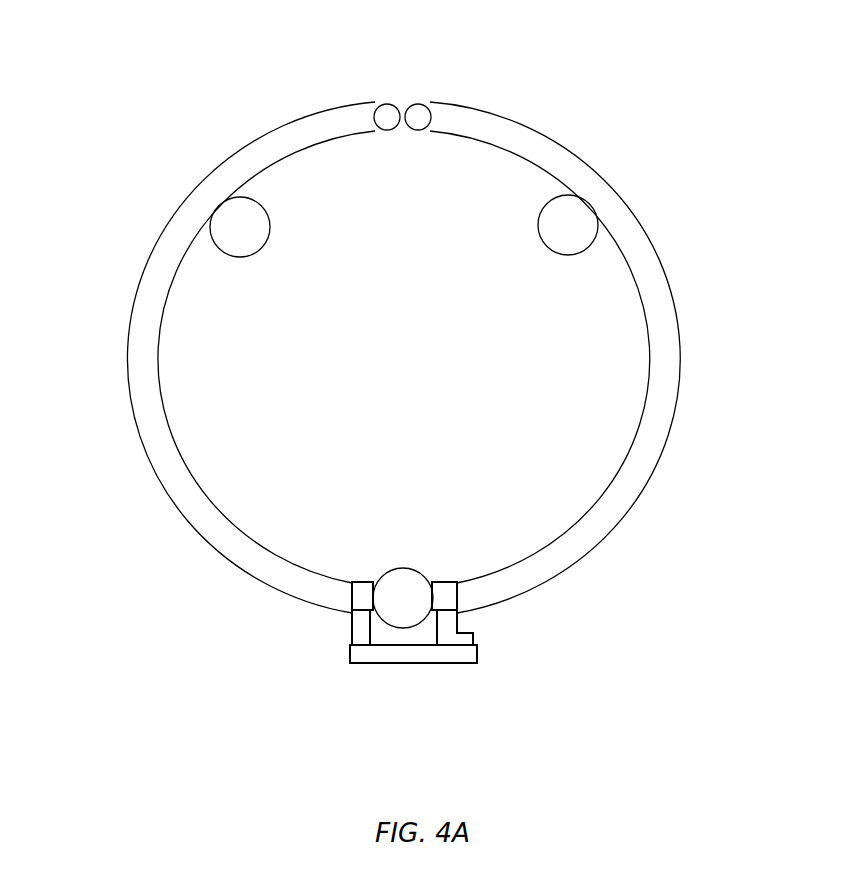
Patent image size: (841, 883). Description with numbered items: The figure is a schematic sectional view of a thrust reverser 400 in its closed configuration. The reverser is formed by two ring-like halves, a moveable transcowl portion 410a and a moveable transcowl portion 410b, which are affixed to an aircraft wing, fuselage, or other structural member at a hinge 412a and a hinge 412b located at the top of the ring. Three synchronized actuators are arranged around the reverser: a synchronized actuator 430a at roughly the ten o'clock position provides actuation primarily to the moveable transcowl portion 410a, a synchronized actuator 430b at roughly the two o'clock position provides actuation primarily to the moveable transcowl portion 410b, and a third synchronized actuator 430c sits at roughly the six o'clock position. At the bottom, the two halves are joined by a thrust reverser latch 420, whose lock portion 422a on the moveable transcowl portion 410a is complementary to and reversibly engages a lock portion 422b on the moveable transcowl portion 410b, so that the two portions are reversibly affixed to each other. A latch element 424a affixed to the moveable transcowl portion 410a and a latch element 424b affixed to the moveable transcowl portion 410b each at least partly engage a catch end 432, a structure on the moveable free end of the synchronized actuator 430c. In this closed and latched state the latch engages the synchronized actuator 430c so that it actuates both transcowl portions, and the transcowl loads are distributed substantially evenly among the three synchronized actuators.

The thrust reverser 400 is at (123, 61).
The moveable transcowl portion 410a is at (184, 516).
The moveable transcowl portion 410b is at (622, 514).
The hinge 412a is at (385, 105).
The hinge 412b is at (420, 105).
The synchronized actuator 430a is at (260, 250).
The synchronized actuator 430b is at (548, 250).
The synchronized actuator 430c is at (407, 568).
The catch end 432 is at (403, 598).
The thrust reverser latch 420 is at (336, 678).
The lock portion 422a is at (408, 663).
The lock portion 422b is at (458, 624).
The latch element 424a is at (364, 582).
The latch element 424b is at (447, 582).